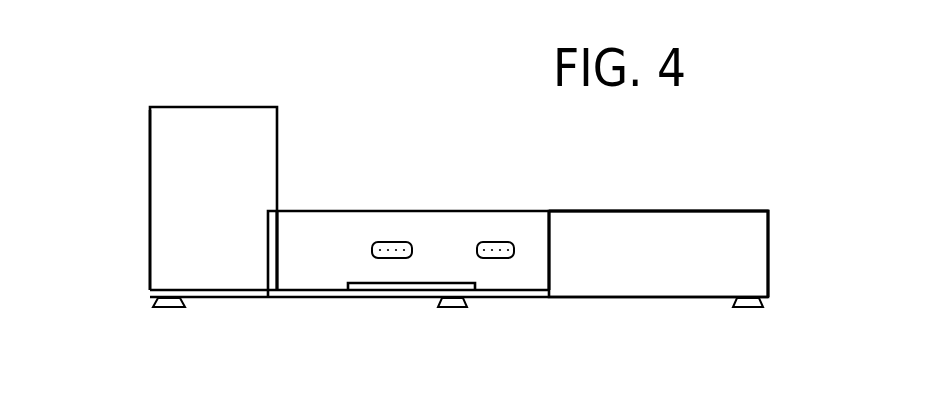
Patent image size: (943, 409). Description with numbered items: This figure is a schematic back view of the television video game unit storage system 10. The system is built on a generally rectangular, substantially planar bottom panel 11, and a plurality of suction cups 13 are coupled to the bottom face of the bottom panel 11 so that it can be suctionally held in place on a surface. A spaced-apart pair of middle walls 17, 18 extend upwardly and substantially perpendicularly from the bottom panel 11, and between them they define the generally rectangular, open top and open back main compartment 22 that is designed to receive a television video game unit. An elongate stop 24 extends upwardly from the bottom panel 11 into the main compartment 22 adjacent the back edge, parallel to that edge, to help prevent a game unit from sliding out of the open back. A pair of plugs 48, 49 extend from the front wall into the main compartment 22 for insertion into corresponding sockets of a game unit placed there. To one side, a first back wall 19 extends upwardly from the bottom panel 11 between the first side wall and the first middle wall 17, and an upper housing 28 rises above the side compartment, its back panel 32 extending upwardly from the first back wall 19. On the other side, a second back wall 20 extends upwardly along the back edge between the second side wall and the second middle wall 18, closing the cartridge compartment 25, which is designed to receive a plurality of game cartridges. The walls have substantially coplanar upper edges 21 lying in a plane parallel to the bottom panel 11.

The television video game unit storage system 10 is at (138, 80).
The upper housing 28 is at (202, 98).
The back panel 32 is at (160, 141).
The main compartment 22 is at (408, 204).
The bottom panel 11 is at (327, 298).
The middle wall 17 is at (279, 268).
The middle wall 18 is at (548, 256).
The elongate stop 24 is at (405, 284).
The plug 49 is at (375, 242).
The plug 48 is at (488, 242).
The first back wall 19 is at (163, 258).
The suction cups 13 is at (463, 307).
The second back wall 20 is at (716, 212).
The upper edges 21 is at (568, 212).
The cartridge compartment 25 is at (652, 190).